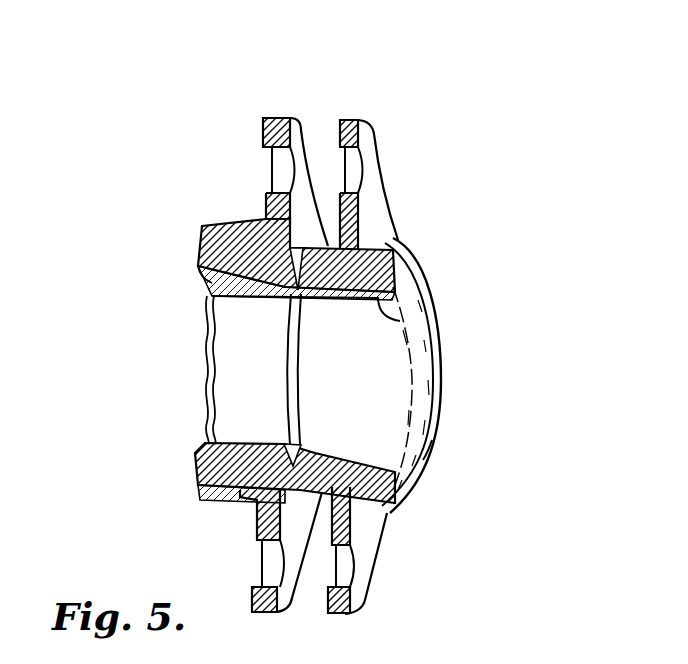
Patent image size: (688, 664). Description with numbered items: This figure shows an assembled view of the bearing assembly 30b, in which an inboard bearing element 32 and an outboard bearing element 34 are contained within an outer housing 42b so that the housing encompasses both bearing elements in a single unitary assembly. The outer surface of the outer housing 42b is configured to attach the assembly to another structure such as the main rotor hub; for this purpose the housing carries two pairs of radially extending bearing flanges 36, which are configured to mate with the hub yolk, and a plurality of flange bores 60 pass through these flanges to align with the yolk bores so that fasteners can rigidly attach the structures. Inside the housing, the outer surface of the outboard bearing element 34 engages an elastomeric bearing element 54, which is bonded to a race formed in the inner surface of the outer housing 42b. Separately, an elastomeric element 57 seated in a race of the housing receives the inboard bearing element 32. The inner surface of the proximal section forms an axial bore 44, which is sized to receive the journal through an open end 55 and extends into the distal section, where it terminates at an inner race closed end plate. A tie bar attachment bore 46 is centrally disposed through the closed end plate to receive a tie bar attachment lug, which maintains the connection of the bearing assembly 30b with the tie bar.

The bearing assembly 30b is at (486, 180).
The inboard bearing element 32 is at (200, 287).
The outboard bearing element 34 is at (400, 321).
The bearing flanges 36 is at (348, 120).
The outer housing 42b is at (392, 150).
The axial bore 44 is at (372, 377).
The tie bar attachment bore 46 is at (423, 457).
The elastomeric bearing element 54 is at (413, 272).
The open end 55 is at (458, 404).
The elastomeric element 57 is at (205, 253).
The flange bores 60 is at (357, 566).